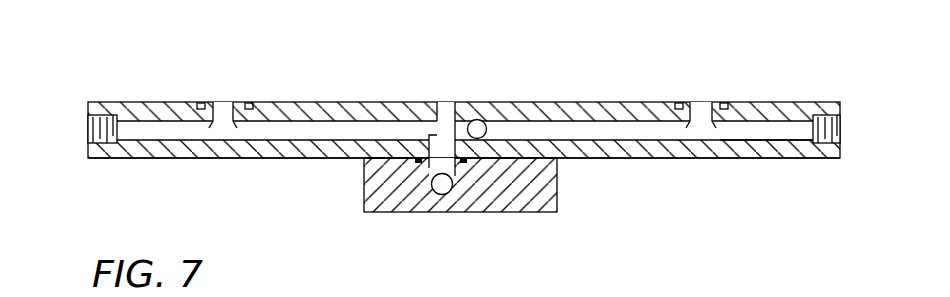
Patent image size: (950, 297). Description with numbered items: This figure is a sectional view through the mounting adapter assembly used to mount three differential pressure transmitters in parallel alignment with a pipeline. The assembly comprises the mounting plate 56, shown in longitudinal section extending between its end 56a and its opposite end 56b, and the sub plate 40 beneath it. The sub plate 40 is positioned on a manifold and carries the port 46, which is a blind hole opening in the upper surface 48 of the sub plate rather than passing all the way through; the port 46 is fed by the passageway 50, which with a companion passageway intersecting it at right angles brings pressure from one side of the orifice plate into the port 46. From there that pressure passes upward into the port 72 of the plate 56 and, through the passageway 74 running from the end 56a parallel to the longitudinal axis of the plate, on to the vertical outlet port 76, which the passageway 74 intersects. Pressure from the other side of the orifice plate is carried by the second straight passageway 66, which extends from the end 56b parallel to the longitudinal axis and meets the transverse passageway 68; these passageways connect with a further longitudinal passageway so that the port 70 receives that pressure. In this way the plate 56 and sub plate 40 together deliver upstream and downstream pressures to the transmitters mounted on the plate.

The sub plate 40 is at (363, 183).
The port 46 is at (432, 168).
The upper surface 48 is at (535, 158).
The passageway 50 is at (448, 187).
The mounting plate 56 is at (615, 103).
The end 56a is at (88, 148).
The end 56b is at (870, 151).
The second straight passageway 66 is at (762, 131).
The transverse passageway 68 is at (483, 119).
The port 70 is at (703, 125).
The port 72 is at (445, 130).
The passageway 74 is at (303, 128).
The vertical outlet port 76 is at (223, 108).